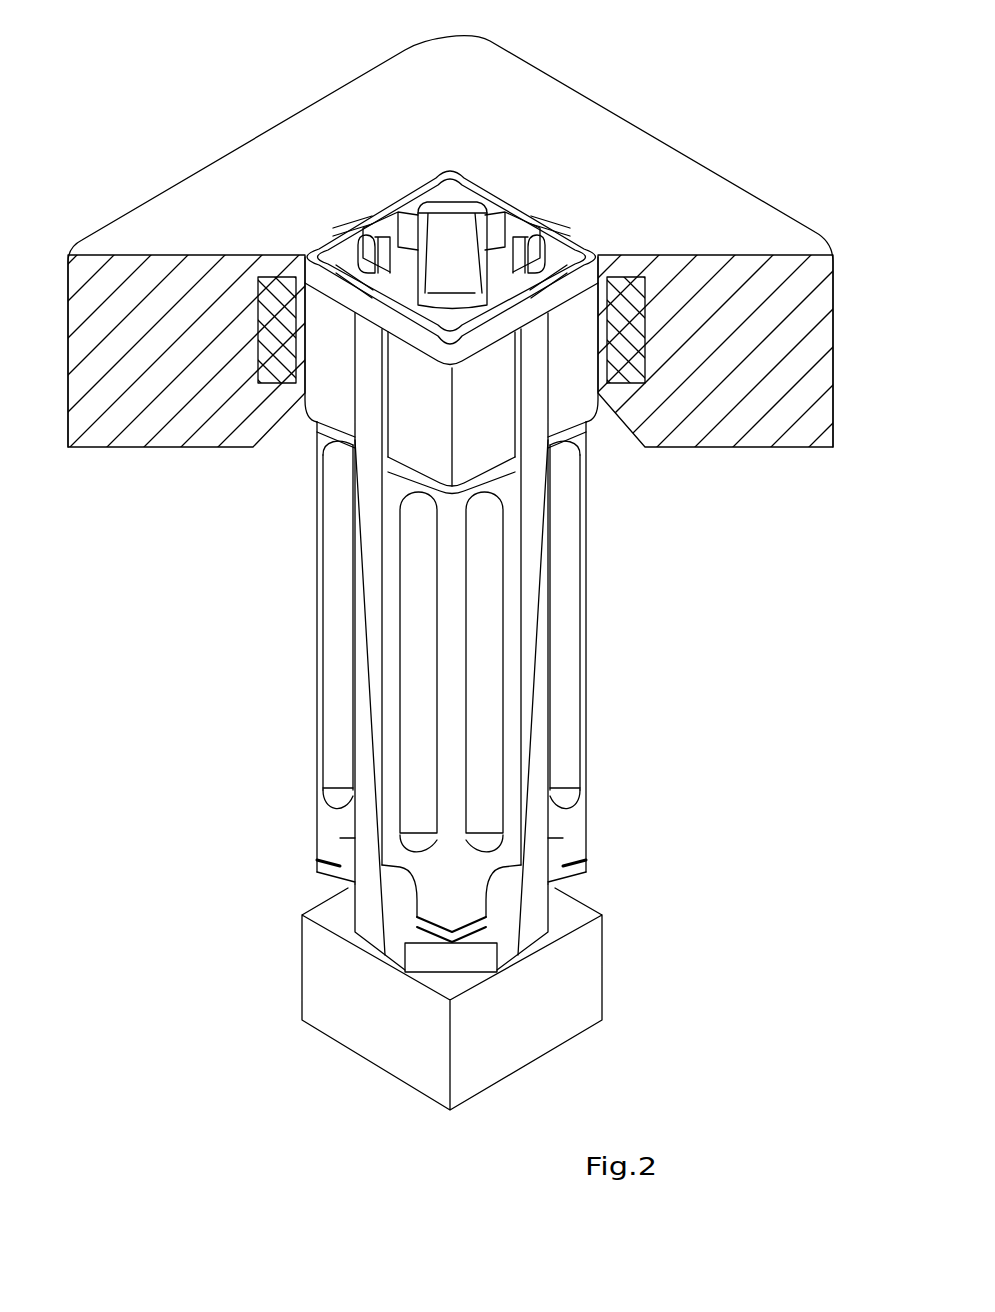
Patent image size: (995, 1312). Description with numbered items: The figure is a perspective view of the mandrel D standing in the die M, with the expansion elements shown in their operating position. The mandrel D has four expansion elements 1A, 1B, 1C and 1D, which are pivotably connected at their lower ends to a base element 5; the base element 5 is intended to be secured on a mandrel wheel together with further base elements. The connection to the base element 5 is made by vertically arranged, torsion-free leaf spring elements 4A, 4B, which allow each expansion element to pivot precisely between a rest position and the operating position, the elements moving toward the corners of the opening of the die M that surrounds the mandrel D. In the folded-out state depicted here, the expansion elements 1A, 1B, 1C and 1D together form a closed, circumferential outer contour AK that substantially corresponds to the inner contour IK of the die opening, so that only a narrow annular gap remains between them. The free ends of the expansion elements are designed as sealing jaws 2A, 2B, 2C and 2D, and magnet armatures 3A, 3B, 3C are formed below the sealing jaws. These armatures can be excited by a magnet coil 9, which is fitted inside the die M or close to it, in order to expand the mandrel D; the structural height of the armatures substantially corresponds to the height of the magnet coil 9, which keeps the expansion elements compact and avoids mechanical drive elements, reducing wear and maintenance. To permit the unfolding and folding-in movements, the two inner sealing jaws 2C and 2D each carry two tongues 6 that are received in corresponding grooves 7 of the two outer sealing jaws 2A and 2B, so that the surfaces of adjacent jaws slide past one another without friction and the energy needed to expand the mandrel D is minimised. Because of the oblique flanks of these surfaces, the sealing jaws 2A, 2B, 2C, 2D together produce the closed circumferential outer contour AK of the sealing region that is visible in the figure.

The die M is at (373, 100).
The magnet coil 9 is at (273, 367).
The outer contour AK is at (328, 308).
The inner contour IK is at (344, 222).
The sealing jaw 2D is at (426, 196).
The expansion element 1D is at (451, 230).
The tongue 6 is at (512, 220).
The groove 7 is at (558, 235).
The sealing jaw 2A is at (303, 255).
The sealing jaw 2B is at (582, 292).
The sealing jaw 2C is at (428, 347).
The magnet armature 3A is at (330, 383).
The magnet armature 3B is at (561, 410).
The magnet armature 3C is at (481, 417).
The expansion element 1A is at (338, 617).
The expansion element 1B is at (565, 617).
The expansion element 1C is at (452, 657).
The mandrel D is at (248, 576).
The leaf spring element 4A is at (372, 920).
The leaf spring element 4B is at (560, 922).
The base element 5 is at (575, 993).